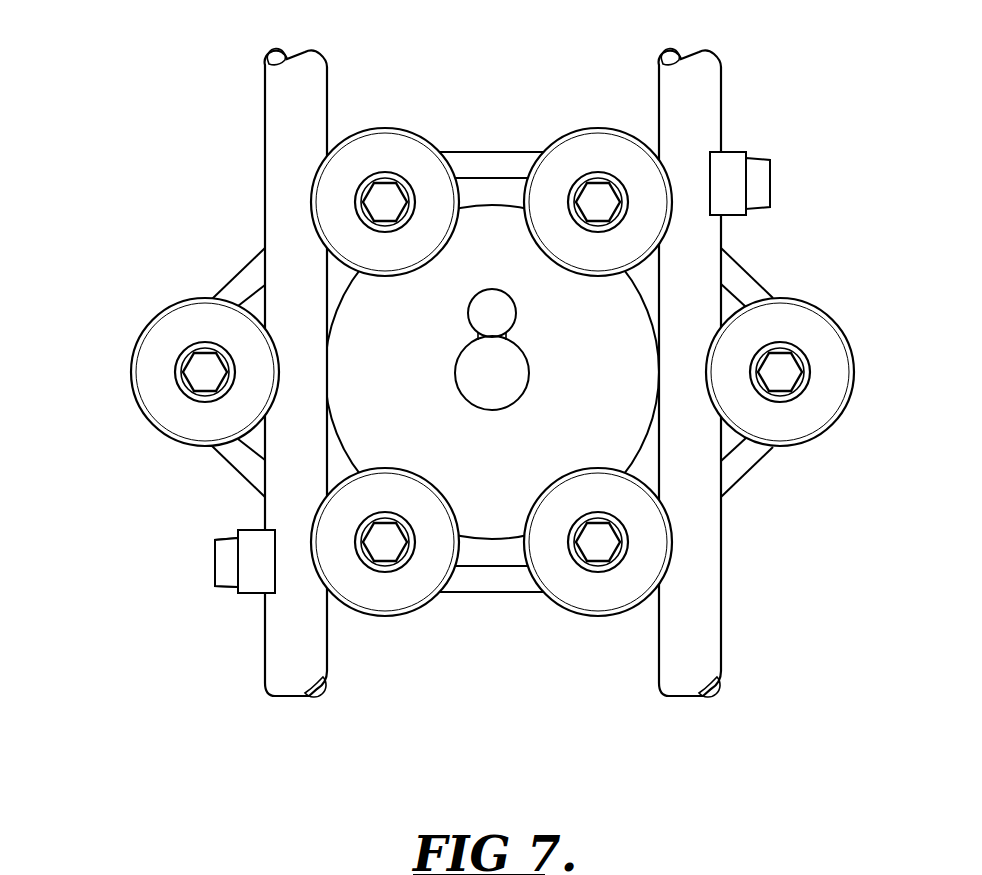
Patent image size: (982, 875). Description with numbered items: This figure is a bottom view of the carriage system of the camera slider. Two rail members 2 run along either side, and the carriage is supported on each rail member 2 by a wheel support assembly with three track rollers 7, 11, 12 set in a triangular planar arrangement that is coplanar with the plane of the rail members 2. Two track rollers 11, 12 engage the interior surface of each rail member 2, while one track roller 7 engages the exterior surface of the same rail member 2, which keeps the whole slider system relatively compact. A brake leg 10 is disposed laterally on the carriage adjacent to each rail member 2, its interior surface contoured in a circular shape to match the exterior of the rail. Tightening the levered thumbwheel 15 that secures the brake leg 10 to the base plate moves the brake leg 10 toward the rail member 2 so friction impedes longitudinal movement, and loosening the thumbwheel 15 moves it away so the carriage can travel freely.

The rail member 2 is at (262, 112).
The track roller 7 is at (797, 448).
The brake leg 10 is at (212, 560).
The track roller 11 is at (603, 620).
The track roller 12 is at (604, 126).
The levered thumbwheel 15 is at (212, 560).